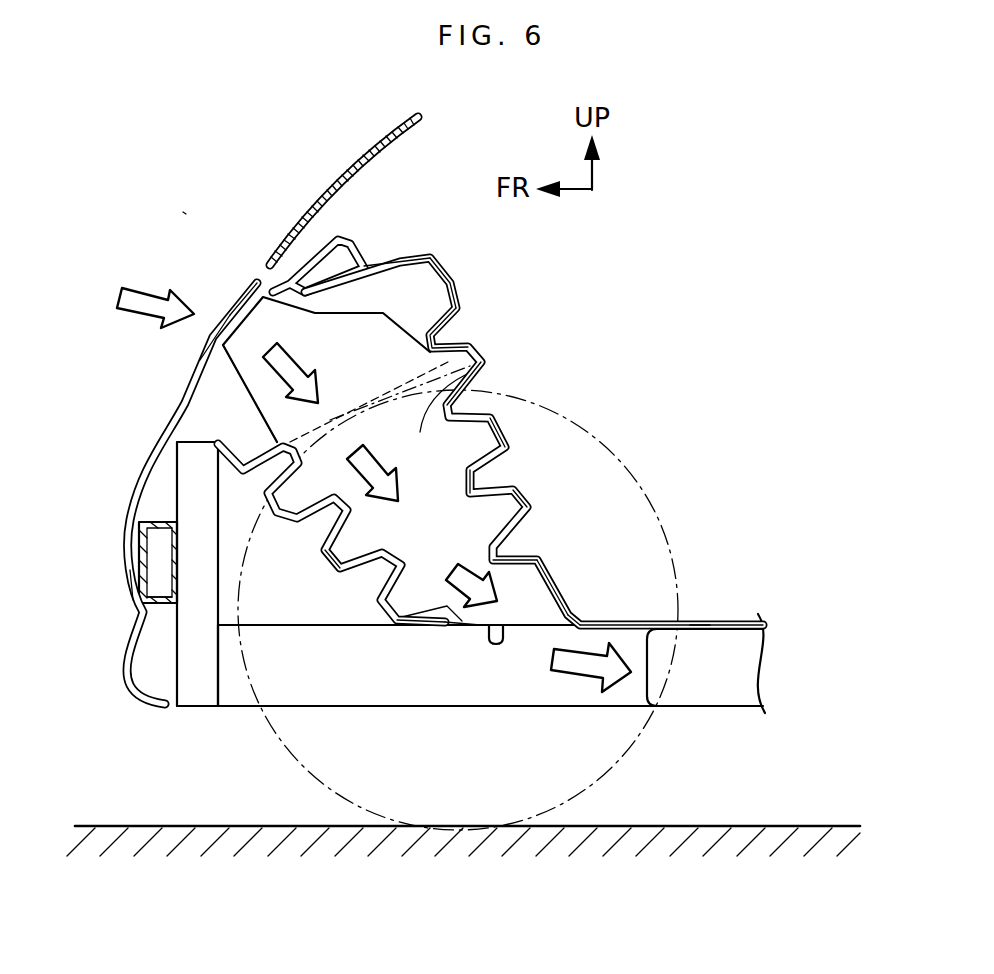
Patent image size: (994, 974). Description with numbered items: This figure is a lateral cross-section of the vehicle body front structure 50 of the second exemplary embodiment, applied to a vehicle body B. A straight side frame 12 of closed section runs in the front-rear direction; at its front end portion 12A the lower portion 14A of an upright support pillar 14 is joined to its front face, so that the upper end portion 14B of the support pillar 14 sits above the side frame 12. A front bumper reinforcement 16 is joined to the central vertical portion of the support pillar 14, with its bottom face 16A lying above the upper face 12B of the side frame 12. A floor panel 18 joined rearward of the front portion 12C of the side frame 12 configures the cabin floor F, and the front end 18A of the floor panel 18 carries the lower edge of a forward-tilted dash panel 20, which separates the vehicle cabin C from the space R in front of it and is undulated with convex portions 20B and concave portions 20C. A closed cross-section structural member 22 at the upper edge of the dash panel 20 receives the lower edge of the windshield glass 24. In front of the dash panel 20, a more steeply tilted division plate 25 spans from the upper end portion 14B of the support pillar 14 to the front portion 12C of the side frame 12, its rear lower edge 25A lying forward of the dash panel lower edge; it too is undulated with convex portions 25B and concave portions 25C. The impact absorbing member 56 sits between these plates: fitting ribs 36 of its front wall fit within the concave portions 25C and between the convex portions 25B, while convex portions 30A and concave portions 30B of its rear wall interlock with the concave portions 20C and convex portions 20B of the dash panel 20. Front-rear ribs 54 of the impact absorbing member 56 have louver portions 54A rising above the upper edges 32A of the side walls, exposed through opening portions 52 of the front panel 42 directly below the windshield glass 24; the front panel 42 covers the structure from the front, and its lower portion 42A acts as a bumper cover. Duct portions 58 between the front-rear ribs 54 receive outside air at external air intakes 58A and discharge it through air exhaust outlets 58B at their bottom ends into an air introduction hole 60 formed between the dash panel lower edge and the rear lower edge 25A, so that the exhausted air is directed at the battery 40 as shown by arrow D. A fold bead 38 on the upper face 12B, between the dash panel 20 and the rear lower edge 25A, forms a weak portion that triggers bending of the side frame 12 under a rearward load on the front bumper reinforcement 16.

The side frame 12 is at (499, 694).
The front end portion 12A is at (237, 693).
The upper face 12B is at (382, 632).
The front portion 12C is at (340, 693).
The support pillar 14 is at (150, 575).
The lower portion 14A is at (195, 708).
The upper end portion 14B is at (195, 442).
The front bumper reinforcement 16 is at (115, 584).
The bottom face 16A is at (155, 606).
The floor panel 18 is at (728, 620).
The front end 18A is at (570, 592).
The dash panel 20 is at (536, 421).
The convex portion 20B is at (478, 405).
The concave portion 20C is at (480, 440).
The closed cross-section structural member 22 is at (358, 248).
The windshield glass 24 is at (368, 153).
The division plate 25 is at (339, 563).
The rear lower edge 25A is at (428, 630).
The convex portion 25B is at (322, 540).
The concave portion 25C is at (319, 676).
The convex portion 30A is at (480, 455).
The concave portion 30B is at (500, 483).
The upper edge 32A is at (345, 405).
The fitting rib 36 is at (404, 597).
The fold bead 38 is at (515, 615).
The battery 40 is at (720, 662).
The front panel 42 is at (144, 458).
The lower portion 42A is at (125, 590).
The vehicle body front structure 50 is at (184, 212).
The opening portion 52 is at (217, 320).
The front-rear rib 54 is at (462, 345).
The louver portion 54A is at (435, 262).
The impact absorbing member 56 is at (455, 293).
The duct portion 58 is at (416, 516).
The external air intake 58A is at (251, 332).
The air exhaust outlet 58B is at (487, 698).
The air introduction hole 60 is at (556, 590).
The vehicle body B is at (690, 728).
The vehicle cabin C is at (674, 475).
The arrow D is at (373, 465).
The floor F is at (700, 620).
The space R is at (231, 428).